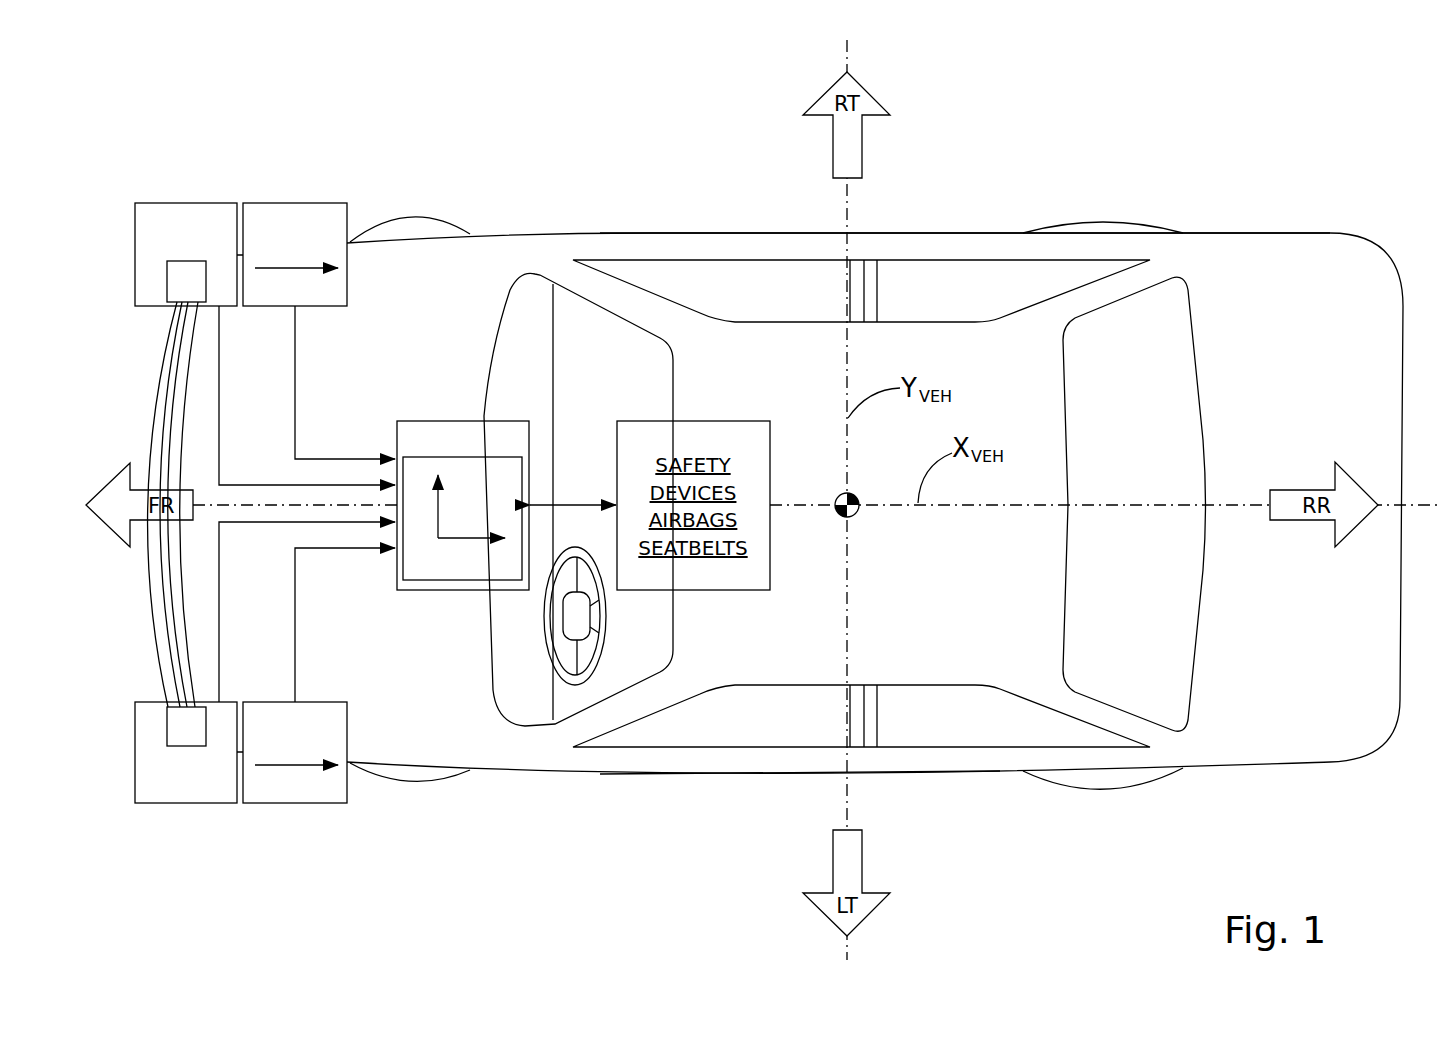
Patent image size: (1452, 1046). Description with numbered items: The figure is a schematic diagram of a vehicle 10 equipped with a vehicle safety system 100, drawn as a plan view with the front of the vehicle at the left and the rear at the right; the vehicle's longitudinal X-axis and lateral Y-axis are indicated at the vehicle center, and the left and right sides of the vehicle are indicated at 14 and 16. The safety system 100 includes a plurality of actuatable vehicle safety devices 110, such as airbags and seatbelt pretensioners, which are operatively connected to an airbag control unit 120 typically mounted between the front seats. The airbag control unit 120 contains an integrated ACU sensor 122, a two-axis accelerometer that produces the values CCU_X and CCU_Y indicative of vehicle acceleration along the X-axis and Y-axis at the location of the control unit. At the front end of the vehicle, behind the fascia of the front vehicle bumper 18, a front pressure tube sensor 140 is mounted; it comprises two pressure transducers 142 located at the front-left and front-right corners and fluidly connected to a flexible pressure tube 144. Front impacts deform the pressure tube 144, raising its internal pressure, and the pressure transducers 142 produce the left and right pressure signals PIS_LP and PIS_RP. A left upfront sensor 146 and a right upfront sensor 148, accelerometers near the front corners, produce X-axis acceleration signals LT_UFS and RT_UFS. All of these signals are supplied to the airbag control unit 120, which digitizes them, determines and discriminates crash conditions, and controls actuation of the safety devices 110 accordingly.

The vehicle 10 is at (325, 170).
The left side of vehicle 14 is at (588, 803).
The right side of vehicle 16 is at (623, 203).
The front vehicle bumper 18 is at (158, 408).
The vehicle safety system 100 is at (505, 165).
The actuatable vehicle safety devices 110 is at (650, 438).
The airbag control unit 120 is at (422, 437).
The ACU sensor 122 is at (427, 568).
The front pressure tube sensor 140 is at (197, 805).
The pressure transducers 142 is at (197, 292).
The pressure tube 144 is at (165, 458).
The left upfront sensor 146 is at (290, 790).
The right upfront sensor 148 is at (277, 210).